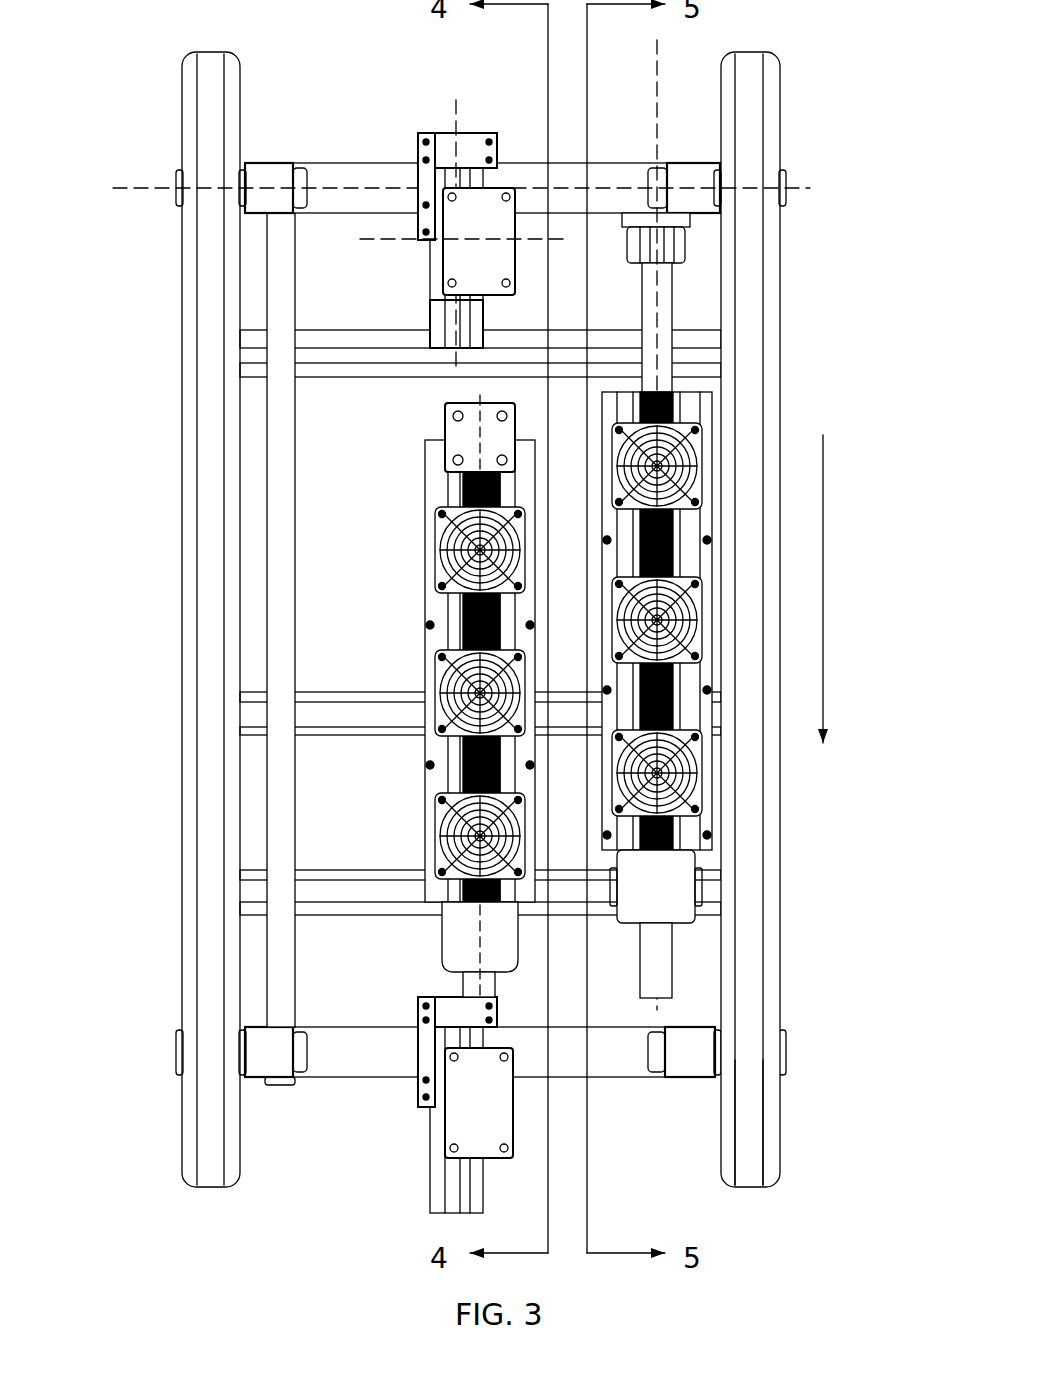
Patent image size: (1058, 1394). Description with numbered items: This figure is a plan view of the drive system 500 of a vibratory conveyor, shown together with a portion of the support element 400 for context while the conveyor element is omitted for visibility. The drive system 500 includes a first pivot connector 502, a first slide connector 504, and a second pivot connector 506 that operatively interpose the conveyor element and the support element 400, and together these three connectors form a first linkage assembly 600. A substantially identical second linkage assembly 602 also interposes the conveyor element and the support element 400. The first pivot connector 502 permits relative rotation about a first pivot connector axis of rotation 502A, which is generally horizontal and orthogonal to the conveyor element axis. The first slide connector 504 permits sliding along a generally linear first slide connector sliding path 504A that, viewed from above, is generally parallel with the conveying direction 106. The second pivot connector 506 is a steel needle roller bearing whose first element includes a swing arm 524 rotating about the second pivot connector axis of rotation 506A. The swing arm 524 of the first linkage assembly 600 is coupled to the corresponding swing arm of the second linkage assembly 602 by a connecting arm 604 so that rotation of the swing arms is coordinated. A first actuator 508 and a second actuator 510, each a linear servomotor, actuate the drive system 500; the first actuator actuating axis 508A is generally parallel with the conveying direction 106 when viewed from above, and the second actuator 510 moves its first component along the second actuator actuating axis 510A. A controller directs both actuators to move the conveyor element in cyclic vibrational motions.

The conveying direction 106 is at (823, 572).
The support element 400 is at (182, 815).
The drive system 500 is at (118, 105).
The first pivot connector 502 is at (509, 184).
The first pivot connector axis of rotation 502A is at (407, 240).
The first slide connector 504 is at (430, 130).
The first slide connector sliding path 504A is at (458, 352).
The second pivot connector 506 is at (180, 222).
The second pivot connector axis of rotation 506A is at (755, 190).
The first actuator 508 is at (435, 610).
The first actuator actuating axis 508A is at (480, 923).
The second actuator 510 is at (697, 410).
The second actuator actuating axis 510A is at (663, 933).
The swing arm 524 is at (337, 178).
The first linkage assembly 600 is at (810, 157).
The second linkage assembly 602 is at (790, 1077).
The connecting arm 604 is at (277, 585).